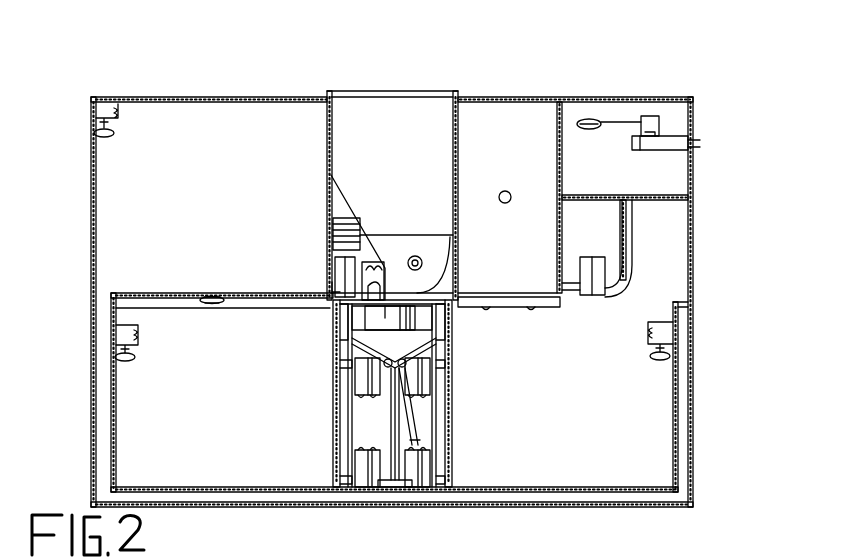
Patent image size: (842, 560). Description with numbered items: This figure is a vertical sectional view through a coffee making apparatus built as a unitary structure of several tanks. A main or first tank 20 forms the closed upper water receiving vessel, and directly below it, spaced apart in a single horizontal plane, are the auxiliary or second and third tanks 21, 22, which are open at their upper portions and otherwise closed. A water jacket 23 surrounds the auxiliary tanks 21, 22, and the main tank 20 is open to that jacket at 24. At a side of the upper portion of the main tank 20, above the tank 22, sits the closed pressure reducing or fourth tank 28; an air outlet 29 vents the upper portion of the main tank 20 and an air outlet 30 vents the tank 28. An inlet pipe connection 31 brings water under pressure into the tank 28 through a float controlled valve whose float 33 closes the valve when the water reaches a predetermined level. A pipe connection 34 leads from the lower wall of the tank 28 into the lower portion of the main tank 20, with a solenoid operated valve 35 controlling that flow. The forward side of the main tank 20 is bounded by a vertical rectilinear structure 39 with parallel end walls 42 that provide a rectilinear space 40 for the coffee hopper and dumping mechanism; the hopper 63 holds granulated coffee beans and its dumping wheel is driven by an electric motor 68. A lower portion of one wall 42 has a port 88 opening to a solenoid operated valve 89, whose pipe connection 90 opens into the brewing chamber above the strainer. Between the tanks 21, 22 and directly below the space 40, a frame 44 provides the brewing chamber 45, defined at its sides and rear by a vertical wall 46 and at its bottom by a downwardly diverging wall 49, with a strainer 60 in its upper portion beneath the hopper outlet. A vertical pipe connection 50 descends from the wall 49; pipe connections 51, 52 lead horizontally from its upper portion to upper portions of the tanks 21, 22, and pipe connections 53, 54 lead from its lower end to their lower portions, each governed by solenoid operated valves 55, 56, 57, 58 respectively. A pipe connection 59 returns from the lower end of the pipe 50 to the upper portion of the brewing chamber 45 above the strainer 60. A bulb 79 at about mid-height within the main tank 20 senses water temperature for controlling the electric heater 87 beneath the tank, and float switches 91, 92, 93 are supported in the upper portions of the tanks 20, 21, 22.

The main or first tank 20 is at (91, 207).
The auxiliary or second tank 21 is at (114, 420).
The auxiliary or third tank 22 is at (679, 392).
The water jacket 23 is at (412, 302).
The opening of main tank to water jacket 24 is at (100, 300).
The pressure reducing or fourth tank 28 is at (691, 172).
The air outlet of main tank 29 is at (558, 94).
The air outlet of pressure reducing tank 30 is at (565, 97).
The inlet pipe connection 31 is at (699, 140).
The float 33 is at (578, 123).
The pipe connection 34 is at (633, 254).
The solenoid operated valve 35 is at (592, 256).
The vertical rectilinear structure 39 is at (458, 150).
The rectilinear space 40 is at (336, 203).
The end walls 42 is at (325, 148).
The frame 44 is at (427, 331).
The brewing chamber 45 is at (356, 327).
The vertical wall 46 is at (435, 323).
The downwardly diverging wall 49 is at (427, 348).
The vertical pipe connection 50 is at (391, 408).
The pipe connection 51 is at (340, 366).
The pipe connection 52 is at (446, 365).
The pipe connection 53 is at (340, 479).
The pipe connection 54 is at (445, 480).
The solenoid operated valve 55 is at (360, 388).
The solenoid operated valve 56 is at (430, 385).
The solenoid operated valve 57 is at (362, 456).
The solenoid operated valve 58 is at (430, 456).
The pipe connection 59 is at (414, 417).
The strainer 60 is at (397, 319).
The hopper 63 is at (392, 195).
The electric motor 68 is at (332, 232).
The bulb 79 is at (505, 203).
The electric heater 87 is at (212, 297).
The port 88 is at (332, 285).
The solenoid operated valve 89 is at (332, 264).
The pipe connection 90 is at (374, 280).
The float switch 91 is at (118, 124).
The float switch 92 is at (132, 350).
The float switch 93 is at (644, 335).